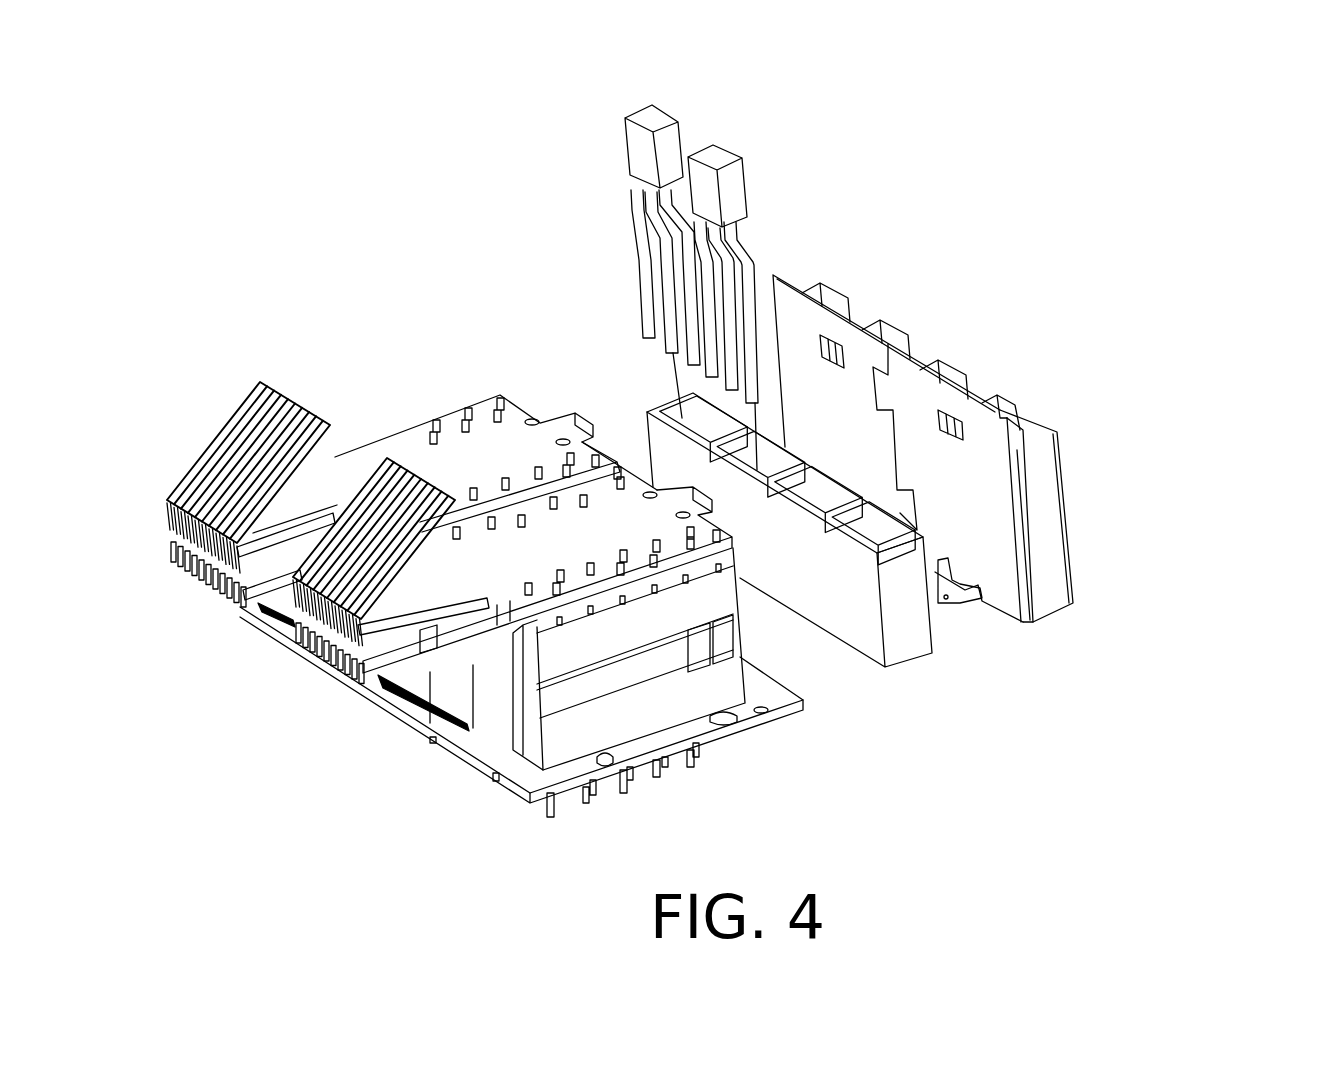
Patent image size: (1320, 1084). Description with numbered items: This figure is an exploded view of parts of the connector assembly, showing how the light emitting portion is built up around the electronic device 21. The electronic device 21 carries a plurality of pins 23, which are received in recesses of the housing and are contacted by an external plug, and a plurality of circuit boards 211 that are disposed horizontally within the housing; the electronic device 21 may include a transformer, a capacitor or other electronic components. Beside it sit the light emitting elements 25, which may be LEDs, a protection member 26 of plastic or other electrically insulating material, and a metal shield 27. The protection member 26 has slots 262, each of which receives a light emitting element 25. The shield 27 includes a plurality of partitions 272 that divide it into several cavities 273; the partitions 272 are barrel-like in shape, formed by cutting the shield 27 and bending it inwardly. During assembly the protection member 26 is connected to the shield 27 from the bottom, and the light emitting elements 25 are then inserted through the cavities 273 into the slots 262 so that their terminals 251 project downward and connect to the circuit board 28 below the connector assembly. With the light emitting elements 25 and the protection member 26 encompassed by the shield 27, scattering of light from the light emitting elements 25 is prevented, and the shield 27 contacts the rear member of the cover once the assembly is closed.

The electronic device 21 is at (612, 728).
The circuit boards 211 is at (512, 450).
The pins 23 is at (263, 385).
The light emitting element 25 is at (668, 148).
The terminals 251 is at (633, 225).
The protection member 26 is at (703, 538).
The slot 262 is at (670, 402).
The shield 27 is at (1007, 400).
The partitions 272 is at (998, 395).
The cavities 273 is at (1020, 430).
The circuit board 28 is at (770, 695).